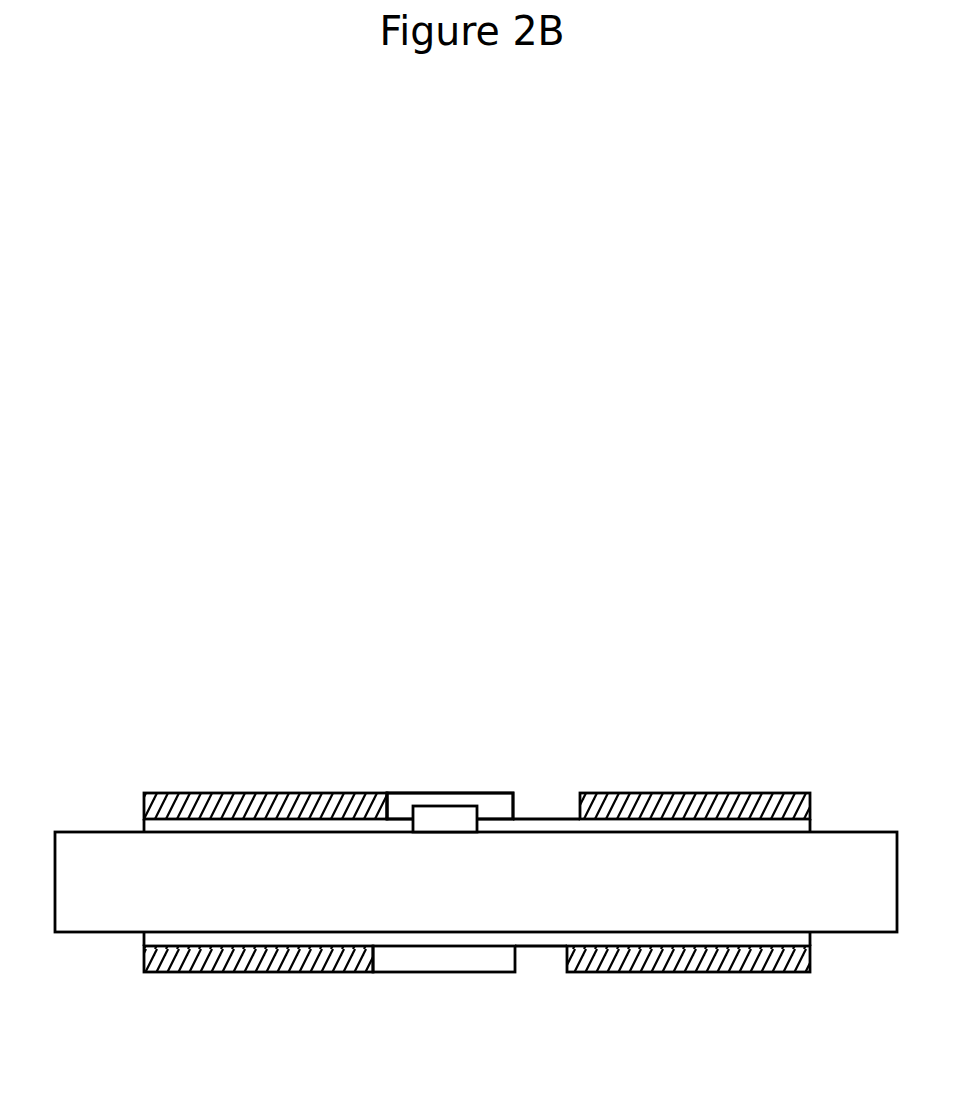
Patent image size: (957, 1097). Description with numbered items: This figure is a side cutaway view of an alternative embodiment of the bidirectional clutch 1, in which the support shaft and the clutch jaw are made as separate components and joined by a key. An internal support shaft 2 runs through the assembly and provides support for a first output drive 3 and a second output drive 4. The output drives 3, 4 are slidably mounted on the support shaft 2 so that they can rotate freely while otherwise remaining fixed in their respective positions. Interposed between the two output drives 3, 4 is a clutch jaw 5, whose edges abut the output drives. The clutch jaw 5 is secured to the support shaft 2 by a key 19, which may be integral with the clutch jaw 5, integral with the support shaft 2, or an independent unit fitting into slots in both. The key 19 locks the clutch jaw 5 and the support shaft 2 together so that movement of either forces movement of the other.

The bidirectional clutch 1 is at (281, 445).
The support shaft 2 is at (80, 857).
The first output drive 3 is at (337, 808).
The second output drive 4 is at (681, 805).
The clutch jaw 5 is at (400, 805).
The key 19 is at (453, 812).